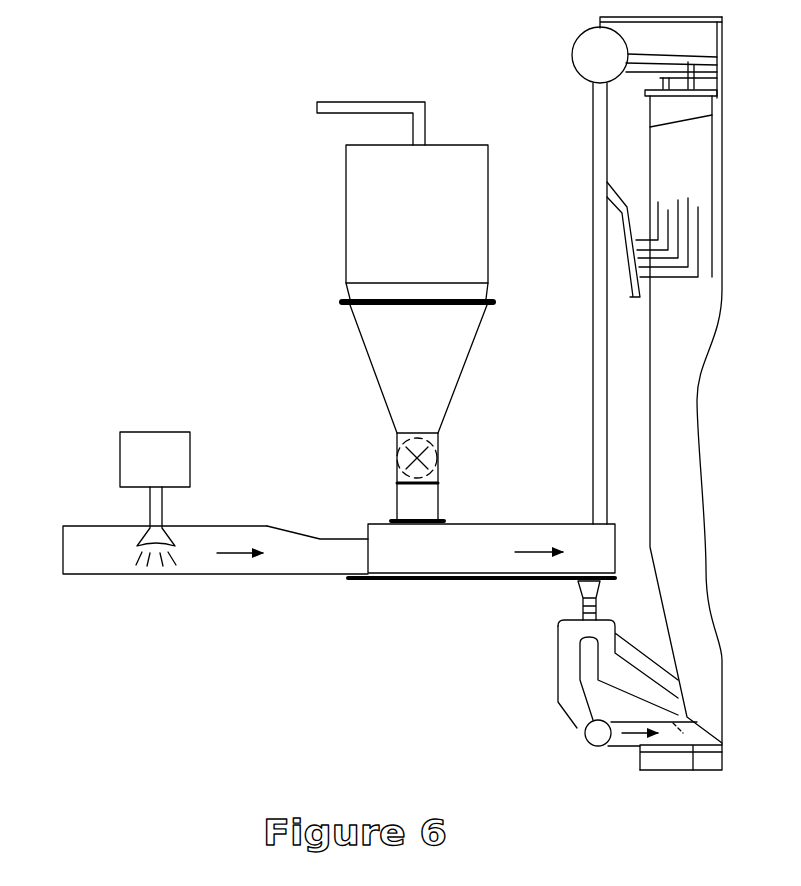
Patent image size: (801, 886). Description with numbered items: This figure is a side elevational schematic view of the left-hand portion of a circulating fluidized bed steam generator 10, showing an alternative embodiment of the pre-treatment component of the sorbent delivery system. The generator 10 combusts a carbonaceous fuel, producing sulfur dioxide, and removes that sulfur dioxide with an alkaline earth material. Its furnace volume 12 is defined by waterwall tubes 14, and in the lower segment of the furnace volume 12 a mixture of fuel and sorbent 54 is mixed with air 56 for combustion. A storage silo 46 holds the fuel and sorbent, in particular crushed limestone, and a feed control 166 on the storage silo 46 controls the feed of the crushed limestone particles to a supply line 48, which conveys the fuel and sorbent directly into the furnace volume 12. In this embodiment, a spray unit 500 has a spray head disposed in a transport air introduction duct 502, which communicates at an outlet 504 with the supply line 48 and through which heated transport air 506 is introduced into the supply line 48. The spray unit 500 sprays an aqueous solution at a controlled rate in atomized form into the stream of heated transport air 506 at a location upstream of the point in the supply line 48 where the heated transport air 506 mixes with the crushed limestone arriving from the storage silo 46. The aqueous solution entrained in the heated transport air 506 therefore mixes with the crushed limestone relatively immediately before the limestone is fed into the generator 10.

The circulating fluidized bed steam generator 10 is at (521, 715).
The furnace volume 12 is at (681, 410).
The waterwall tubes 14 is at (647, 445).
The storage silo 46 is at (370, 390).
The supply line 48 is at (378, 532).
The mixture of fuel and sorbent 54 is at (547, 556).
The air 56 is at (635, 735).
The feed control 166 is at (381, 455).
The spray unit 500 is at (175, 442).
The transport air introduction duct 502 is at (125, 577).
The outlet 504 is at (382, 566).
The heated transport air 506 is at (240, 553).